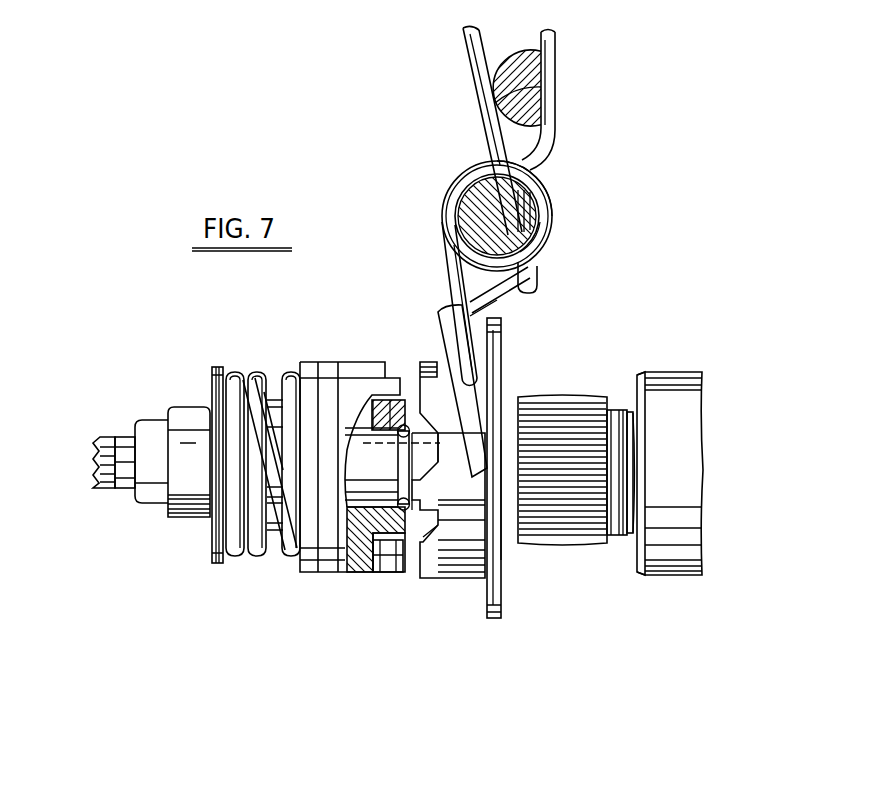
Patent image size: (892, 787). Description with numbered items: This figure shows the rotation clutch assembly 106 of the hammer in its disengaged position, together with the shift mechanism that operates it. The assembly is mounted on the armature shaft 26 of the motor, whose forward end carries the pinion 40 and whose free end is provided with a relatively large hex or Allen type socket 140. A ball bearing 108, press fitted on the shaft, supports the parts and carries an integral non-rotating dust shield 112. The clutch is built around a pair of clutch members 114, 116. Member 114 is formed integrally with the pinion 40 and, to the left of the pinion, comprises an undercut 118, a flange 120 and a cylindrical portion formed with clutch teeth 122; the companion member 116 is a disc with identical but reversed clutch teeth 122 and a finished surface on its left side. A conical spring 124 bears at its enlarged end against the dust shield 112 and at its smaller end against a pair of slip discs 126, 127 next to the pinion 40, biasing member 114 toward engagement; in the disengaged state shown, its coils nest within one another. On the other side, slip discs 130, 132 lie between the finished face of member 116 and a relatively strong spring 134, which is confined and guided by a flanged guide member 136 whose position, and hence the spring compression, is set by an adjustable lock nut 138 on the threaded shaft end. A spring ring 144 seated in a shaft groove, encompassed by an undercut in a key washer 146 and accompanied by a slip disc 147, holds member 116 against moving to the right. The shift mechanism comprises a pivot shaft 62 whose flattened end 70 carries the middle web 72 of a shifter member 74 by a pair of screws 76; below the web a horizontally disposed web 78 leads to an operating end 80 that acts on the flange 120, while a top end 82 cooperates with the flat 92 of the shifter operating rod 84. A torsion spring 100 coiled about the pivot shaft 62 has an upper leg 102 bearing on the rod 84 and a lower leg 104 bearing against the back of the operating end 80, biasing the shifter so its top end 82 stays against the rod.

The armature shaft 26 is at (125, 430).
The pinion 40 is at (578, 395).
The pivot shaft 62 is at (468, 214).
The flat 70 is at (546, 215).
The middle web 72 is at (530, 270).
The shifter member 74 is at (497, 302).
The screws 76 is at (550, 190).
The horizontally disposed web 78 is at (510, 287).
The operating end 80 is at (470, 443).
The top end 82 is at (470, 67).
The shifter operating rod 84 is at (515, 45).
The flat 92 is at (525, 90).
The torsion spring 100 is at (438, 200).
The upper leg 102 is at (556, 66).
The lower leg 104 is at (468, 353).
The rotation clutch assembly 106 is at (393, 0).
The ball bearing 108 is at (688, 370).
The dust shield 112 is at (645, 375).
The clutch member 114 is at (462, 583).
The clutch member 116 is at (353, 390).
The undercut 118 is at (502, 530).
The flange 120 is at (497, 615).
The clutch teeth 122 is at (415, 395).
The conical spring 124 is at (633, 413).
The slip disc 126 is at (613, 520).
The slip disc 127 is at (626, 525).
The slip disc 130 is at (348, 0).
The slip disc 132 is at (322, 0).
The spring 134 is at (270, 557).
The flanged guide member 136 is at (215, 565).
The lock nut 138 is at (152, 497).
The socket 140 is at (102, 458).
The spring ring 144 is at (408, 512).
The key washer 146 is at (392, 573).
The slip disc 147 is at (377, 543).